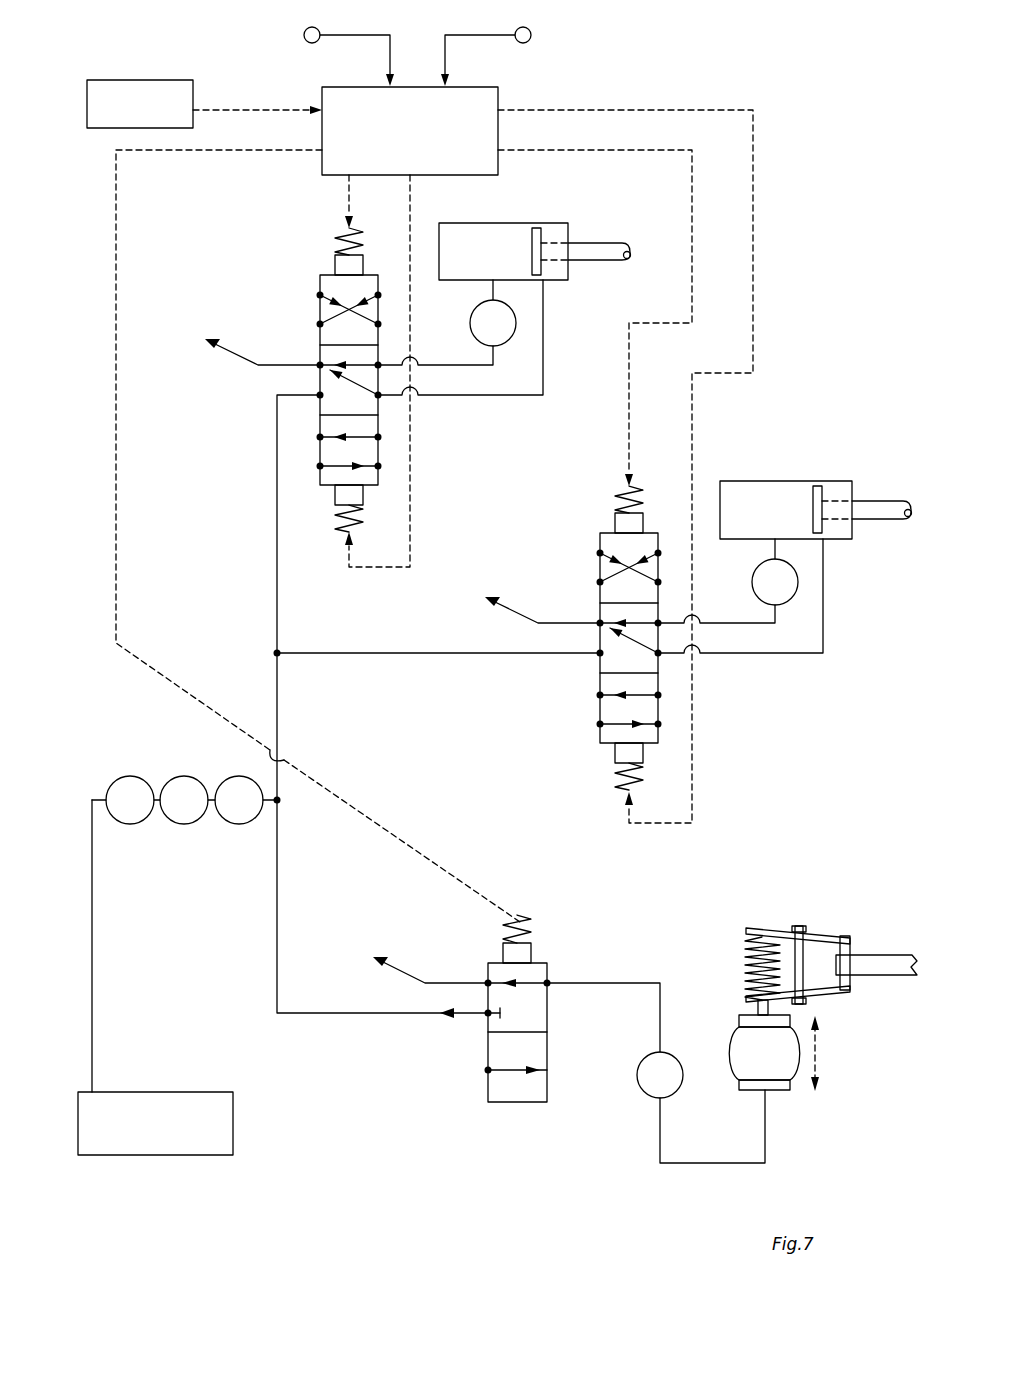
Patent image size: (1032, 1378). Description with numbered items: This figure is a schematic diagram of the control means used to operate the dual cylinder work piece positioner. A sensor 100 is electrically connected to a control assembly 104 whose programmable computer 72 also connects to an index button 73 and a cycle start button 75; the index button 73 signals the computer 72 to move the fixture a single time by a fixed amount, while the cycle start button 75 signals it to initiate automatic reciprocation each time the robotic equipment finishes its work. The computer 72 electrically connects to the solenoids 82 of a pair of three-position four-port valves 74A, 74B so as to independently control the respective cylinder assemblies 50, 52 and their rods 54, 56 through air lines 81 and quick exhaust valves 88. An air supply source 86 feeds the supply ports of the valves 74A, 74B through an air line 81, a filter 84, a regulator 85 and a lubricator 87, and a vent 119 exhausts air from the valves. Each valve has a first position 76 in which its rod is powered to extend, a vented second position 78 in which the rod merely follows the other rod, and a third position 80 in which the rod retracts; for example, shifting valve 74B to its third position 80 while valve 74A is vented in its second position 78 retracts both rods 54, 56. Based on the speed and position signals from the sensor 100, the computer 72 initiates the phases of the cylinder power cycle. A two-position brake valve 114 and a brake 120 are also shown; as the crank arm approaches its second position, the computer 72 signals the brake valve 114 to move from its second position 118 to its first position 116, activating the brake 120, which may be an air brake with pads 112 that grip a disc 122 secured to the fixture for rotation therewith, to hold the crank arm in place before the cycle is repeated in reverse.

The cylinder assembly 50 is at (515, 222).
The cylinder assembly 52 is at (772, 480).
The rod 54 is at (606, 256).
The rod 56 is at (865, 514).
The programmable computer 72 is at (330, 92).
The index button 73 is at (308, 27).
The cycle start button 75 is at (521, 27).
The three-position four-port valve 74A is at (305, 272).
The three-position four-port valve 74B is at (585, 532).
The first position 76 is at (323, 305).
The second position 78 is at (325, 380).
The third position 80 is at (376, 452).
The air line 81 is at (478, 366).
The solenoid 82 is at (340, 262).
The filter 84 is at (125, 776).
The regulator 85 is at (181, 776).
The air supply source 86 is at (203, 1097).
The lubricator 87 is at (245, 776).
The quick exhaust valve 88 is at (471, 320).
The sensor 100 is at (156, 80).
The control assembly 104 is at (680, 98).
The pads 112 is at (845, 940).
The brake valve 114 is at (563, 945).
The first position 116 is at (540, 994).
The second position 118 is at (524, 1094).
The vent 119 is at (208, 338).
The brake 120 is at (727, 914).
The disc 122 is at (866, 962).